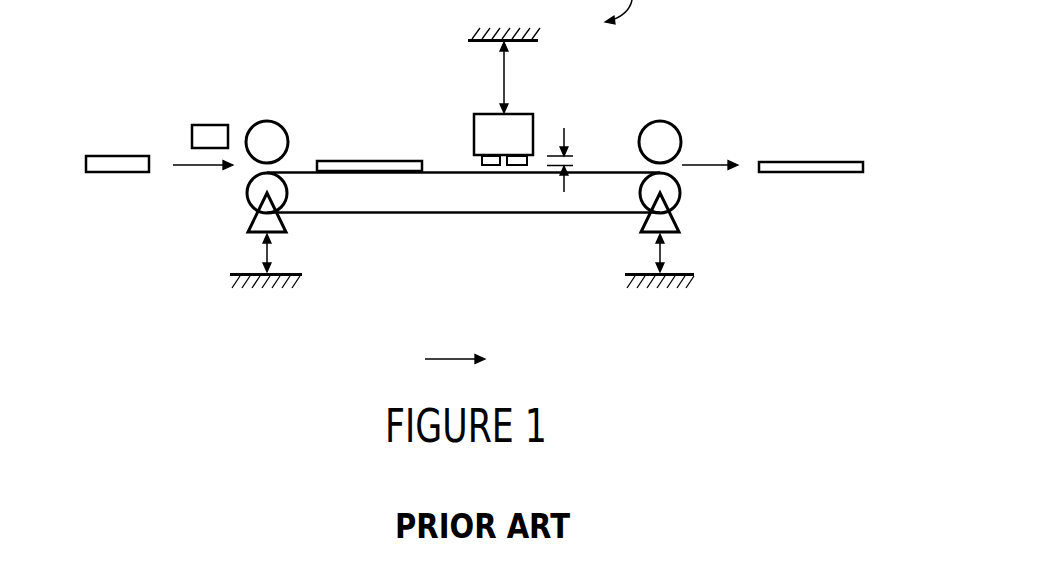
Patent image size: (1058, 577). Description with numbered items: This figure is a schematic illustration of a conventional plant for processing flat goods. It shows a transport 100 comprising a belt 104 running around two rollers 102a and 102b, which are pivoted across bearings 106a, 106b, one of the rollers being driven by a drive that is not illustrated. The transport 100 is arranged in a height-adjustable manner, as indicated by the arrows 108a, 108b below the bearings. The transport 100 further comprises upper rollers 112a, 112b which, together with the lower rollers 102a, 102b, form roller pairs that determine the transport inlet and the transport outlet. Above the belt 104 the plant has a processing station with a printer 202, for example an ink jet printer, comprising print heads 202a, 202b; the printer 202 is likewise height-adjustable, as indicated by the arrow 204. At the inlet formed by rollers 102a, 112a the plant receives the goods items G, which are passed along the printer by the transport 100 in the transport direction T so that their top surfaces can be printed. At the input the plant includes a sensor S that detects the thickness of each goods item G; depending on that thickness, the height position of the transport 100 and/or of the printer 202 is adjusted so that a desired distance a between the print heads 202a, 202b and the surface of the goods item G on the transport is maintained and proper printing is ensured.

The transport 100 is at (155, 228).
The roller 102a is at (287, 193).
The roller 102b is at (680, 193).
The belt 104 is at (416, 213).
The bearing 106a is at (247, 223).
The bearing 106b is at (643, 222).
The arrow 108a is at (272, 255).
The arrow 108b is at (665, 255).
The roller 112a is at (267, 120).
The roller 112b is at (662, 120).
The printer 202 is at (525, 120).
The print head 202a is at (488, 166).
The print head 202b is at (515, 166).
The arrow 204 is at (503, 80).
The distance a is at (573, 158).
The goods item G is at (118, 155).
The sensor S is at (210, 137).
The transport direction T is at (446, 358).